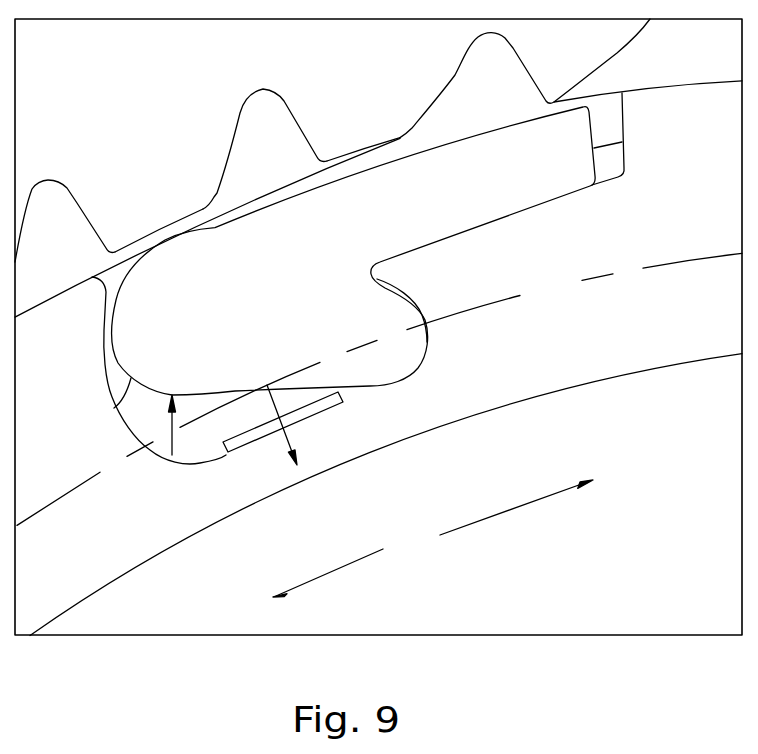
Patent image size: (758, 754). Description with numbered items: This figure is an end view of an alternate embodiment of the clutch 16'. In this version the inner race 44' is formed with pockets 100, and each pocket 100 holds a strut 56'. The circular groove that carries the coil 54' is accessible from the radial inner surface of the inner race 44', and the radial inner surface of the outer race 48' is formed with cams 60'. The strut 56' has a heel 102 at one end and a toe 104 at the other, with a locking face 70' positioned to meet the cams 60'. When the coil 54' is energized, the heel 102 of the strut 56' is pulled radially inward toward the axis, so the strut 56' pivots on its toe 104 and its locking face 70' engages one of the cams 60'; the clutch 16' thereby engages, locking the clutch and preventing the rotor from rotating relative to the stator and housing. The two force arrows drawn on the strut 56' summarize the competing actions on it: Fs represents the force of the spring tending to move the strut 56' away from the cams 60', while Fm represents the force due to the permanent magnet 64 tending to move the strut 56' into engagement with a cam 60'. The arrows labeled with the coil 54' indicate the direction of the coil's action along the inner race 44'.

The clutch 16' is at (207, 222).
The outer race 48' is at (428, 166).
The cams 60' is at (332, 140).
The locking face 70' is at (638, 109).
The strut 56' is at (353, 251).
The inner race 44' is at (379, 444).
The heel 102 is at (114, 408).
The pockets 100 is at (248, 433).
The toe 104 is at (428, 347).
The permanent magnet 64 is at (238, 445).
The coil 54' is at (433, 538).